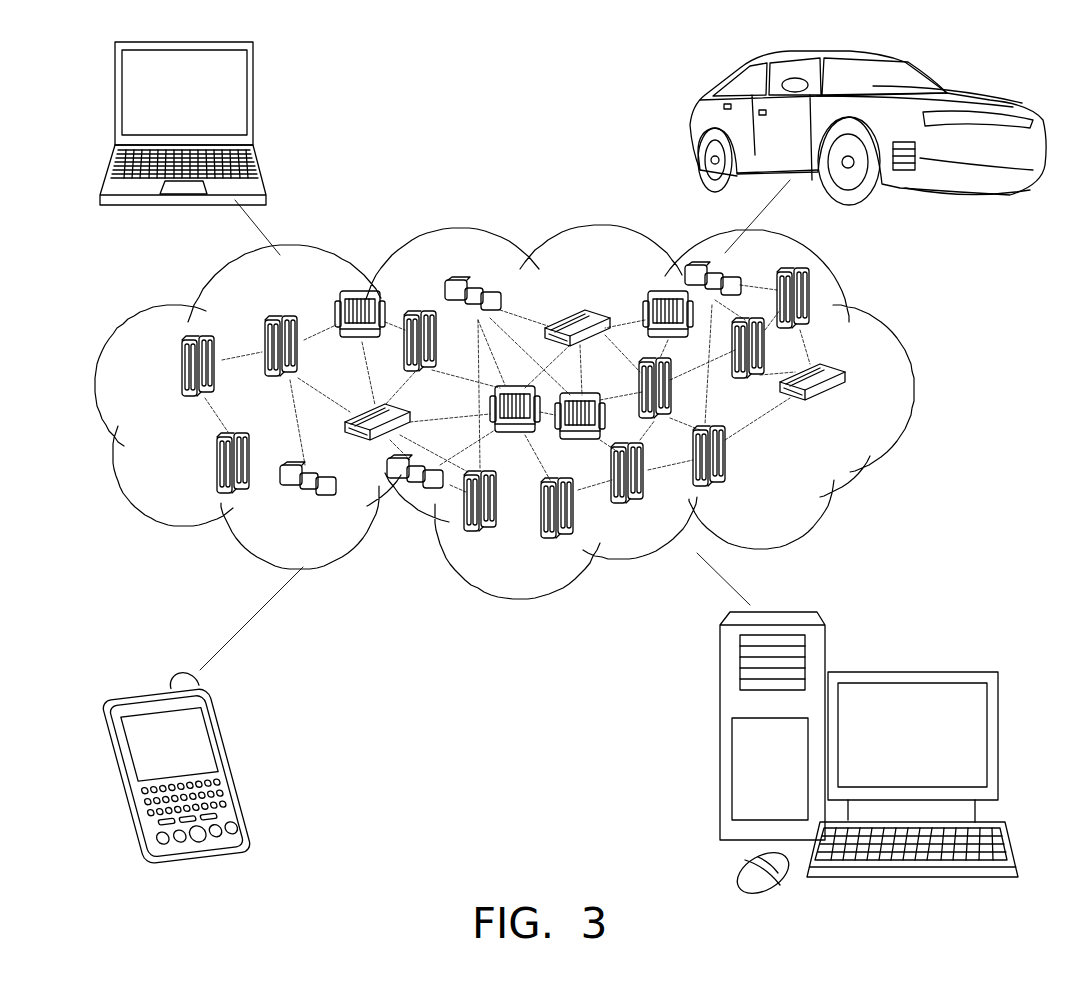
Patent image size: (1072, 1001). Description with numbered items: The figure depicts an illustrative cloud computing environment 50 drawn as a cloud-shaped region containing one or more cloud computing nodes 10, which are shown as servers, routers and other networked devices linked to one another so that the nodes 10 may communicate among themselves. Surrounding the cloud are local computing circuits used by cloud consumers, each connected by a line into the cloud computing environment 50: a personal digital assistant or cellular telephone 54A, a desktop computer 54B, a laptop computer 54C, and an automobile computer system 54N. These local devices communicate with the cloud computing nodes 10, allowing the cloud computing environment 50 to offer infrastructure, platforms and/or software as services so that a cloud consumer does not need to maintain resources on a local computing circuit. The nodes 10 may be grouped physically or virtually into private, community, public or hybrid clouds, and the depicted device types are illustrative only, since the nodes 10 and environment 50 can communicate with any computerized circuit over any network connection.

The cloud computing node 10 is at (858, 414).
The cloud computing environment 50 is at (915, 385).
The personal digital assistant or cellular telephone 54A is at (237, 757).
The desktop computer 54B is at (910, 672).
The laptop computer 54C is at (253, 100).
The automobile computer system 54N is at (693, 130).